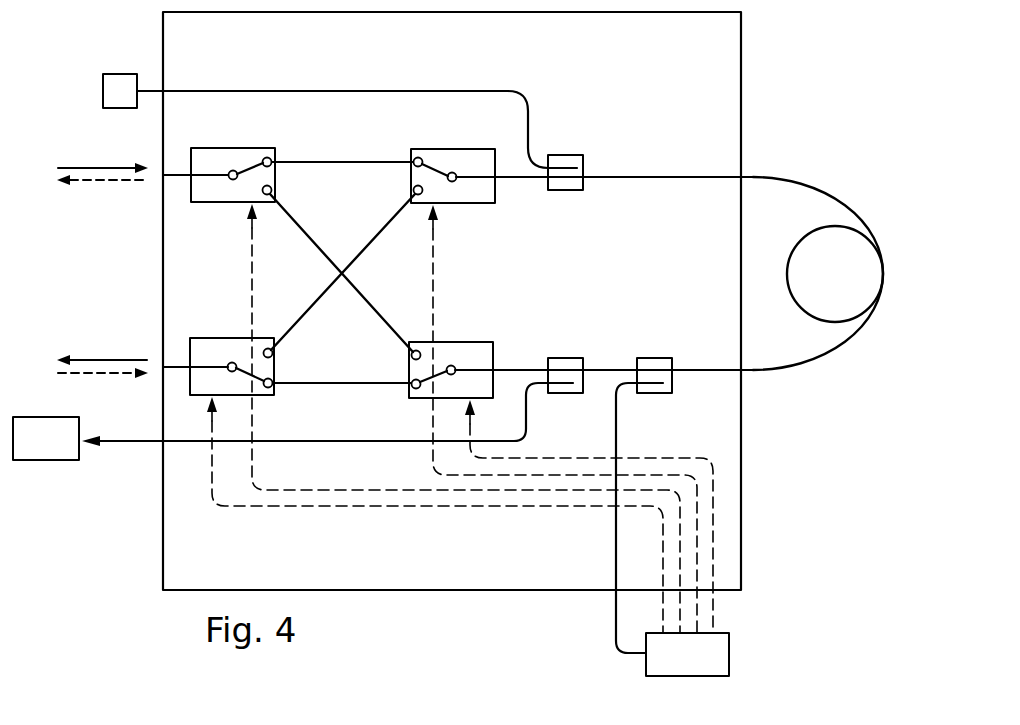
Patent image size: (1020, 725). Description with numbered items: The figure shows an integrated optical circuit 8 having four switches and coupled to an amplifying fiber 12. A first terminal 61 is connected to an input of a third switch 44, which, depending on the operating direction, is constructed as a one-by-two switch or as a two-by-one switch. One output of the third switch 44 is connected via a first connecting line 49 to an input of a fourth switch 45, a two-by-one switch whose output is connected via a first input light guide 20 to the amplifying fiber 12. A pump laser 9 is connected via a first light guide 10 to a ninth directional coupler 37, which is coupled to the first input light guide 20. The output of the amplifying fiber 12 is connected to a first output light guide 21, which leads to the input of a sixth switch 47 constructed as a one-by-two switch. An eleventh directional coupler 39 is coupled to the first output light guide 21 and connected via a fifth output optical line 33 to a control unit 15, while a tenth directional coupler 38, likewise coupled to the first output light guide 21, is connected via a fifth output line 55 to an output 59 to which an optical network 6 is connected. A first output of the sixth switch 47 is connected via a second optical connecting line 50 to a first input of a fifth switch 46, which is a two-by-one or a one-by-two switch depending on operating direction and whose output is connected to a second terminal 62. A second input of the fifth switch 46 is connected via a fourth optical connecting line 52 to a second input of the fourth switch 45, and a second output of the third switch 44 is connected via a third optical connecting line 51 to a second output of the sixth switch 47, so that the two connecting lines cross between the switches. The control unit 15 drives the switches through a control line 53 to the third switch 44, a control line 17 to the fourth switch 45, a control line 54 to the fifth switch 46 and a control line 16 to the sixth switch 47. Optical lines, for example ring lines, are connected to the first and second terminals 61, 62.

The optical network 6 is at (28, 417).
The integrated optical circuit 8 is at (752, 51).
The pump laser 9 is at (125, 80).
The first light guide 10 is at (455, 90).
The amplifying fiber 12 is at (808, 233).
The control unit 15 is at (722, 655).
The control line 16 is at (583, 458).
The control line 17 is at (428, 460).
The first input light guide 20 is at (527, 180).
The first output light guide 21 is at (520, 367).
The fifth output optical line 33 is at (616, 433).
The ninth directional coupler 37 is at (568, 162).
The tenth directional coupler 38 is at (566, 360).
The eleventh directional coupler 39 is at (655, 360).
The third switch 44 is at (222, 150).
The fourth switch 45 is at (480, 155).
The fifth switch 46 is at (214, 342).
The sixth switch 47 is at (477, 346).
The first connecting line 49 is at (345, 160).
The second optical connecting line 50 is at (346, 381).
The third optical connecting line 51 is at (318, 228).
The fourth optical connecting line 52 is at (370, 243).
The control line 53 is at (253, 457).
The control line 54 is at (253, 507).
The fifth output line 55 is at (345, 440).
The output 59 is at (157, 442).
The first terminal 61 is at (158, 172).
The second terminal 62 is at (158, 365).